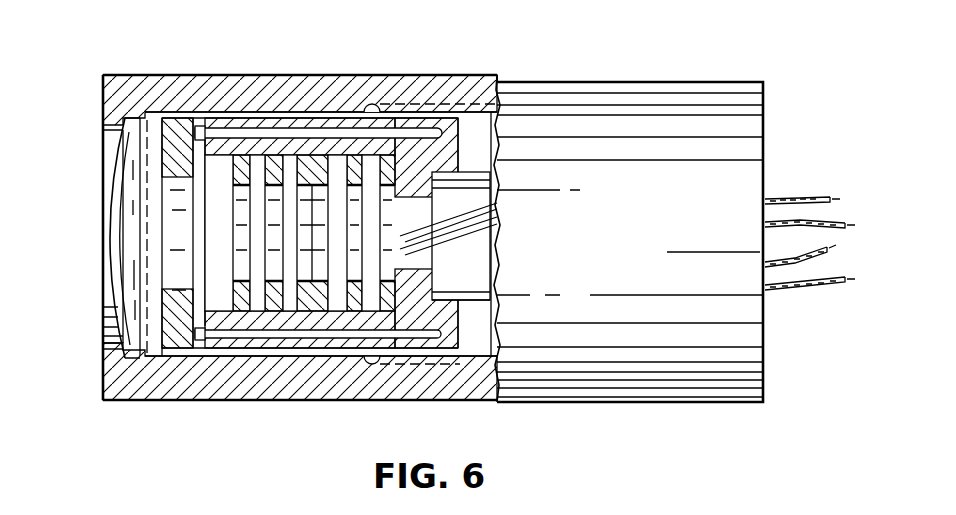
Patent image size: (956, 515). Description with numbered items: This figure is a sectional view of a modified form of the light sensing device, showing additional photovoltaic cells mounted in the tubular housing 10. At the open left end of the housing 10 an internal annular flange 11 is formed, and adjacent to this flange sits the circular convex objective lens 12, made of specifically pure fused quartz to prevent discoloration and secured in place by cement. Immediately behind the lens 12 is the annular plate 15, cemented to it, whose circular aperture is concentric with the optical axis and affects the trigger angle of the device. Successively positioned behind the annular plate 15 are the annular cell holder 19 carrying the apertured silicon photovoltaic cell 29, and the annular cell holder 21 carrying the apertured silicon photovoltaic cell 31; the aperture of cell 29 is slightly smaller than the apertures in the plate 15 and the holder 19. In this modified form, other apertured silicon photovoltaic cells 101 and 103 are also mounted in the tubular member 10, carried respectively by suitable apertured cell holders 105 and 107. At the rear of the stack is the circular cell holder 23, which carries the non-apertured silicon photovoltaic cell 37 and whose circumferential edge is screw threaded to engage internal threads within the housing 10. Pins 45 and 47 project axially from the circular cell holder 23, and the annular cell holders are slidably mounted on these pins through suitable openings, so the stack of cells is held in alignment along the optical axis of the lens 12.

The tubular housing 10 is at (460, 77).
The internal annular flange 11 is at (117, 98).
The circular convex objective lens 12 is at (117, 193).
The annular plate 15 is at (175, 77).
The annular cell holder 19 is at (217, 77).
The annular cell holder 21 is at (287, 77).
The circular cell holder 23 is at (443, 77).
The silicon photovoltaic cell 29 is at (207, 175).
The silicon photovoltaic cell 31 is at (262, 188).
The non-apertured silicon photovoltaic cell 37 is at (395, 254).
The pin 45 is at (253, 77).
The pin 47 is at (265, 382).
The apertured silicon photovoltaic cell 101 is at (300, 198).
The apertured silicon photovoltaic cell 103 is at (345, 190).
The apertured cell holder 105 is at (330, 112).
The apertured cell holder 107 is at (370, 103).